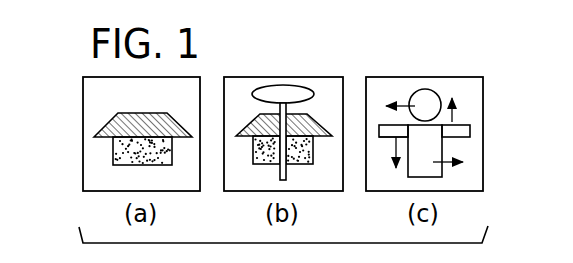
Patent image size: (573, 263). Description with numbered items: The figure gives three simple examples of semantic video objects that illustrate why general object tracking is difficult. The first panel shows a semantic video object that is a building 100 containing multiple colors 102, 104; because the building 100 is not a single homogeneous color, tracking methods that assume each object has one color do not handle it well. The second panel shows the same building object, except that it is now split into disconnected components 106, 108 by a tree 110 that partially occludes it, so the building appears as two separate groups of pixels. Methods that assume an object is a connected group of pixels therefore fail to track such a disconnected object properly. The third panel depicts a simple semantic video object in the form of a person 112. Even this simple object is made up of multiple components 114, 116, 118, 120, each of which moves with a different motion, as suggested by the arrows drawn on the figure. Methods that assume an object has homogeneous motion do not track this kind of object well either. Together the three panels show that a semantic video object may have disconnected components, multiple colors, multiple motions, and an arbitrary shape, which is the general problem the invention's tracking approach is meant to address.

In FIG. 1A, the building 100 is at (99, 154).
In FIG. 1A, the color 102 is at (112, 118).
In FIG. 1A, the color 104 is at (113, 158).
In FIG. 1B, the disconnected component 106 is at (262, 173).
In FIG. 1B, the disconnected component 108 is at (305, 173).
In FIG. 1B, the tree 110 is at (283, 85).
In FIG. 1C, the person 112 is at (441, 80).
In FIG. 1C, the component 114 is at (420, 88).
In FIG. 1C, the component 116 is at (387, 137).
In FIG. 1C, the component 118 is at (435, 177).
In FIG. 1C, the component 120 is at (470, 131).